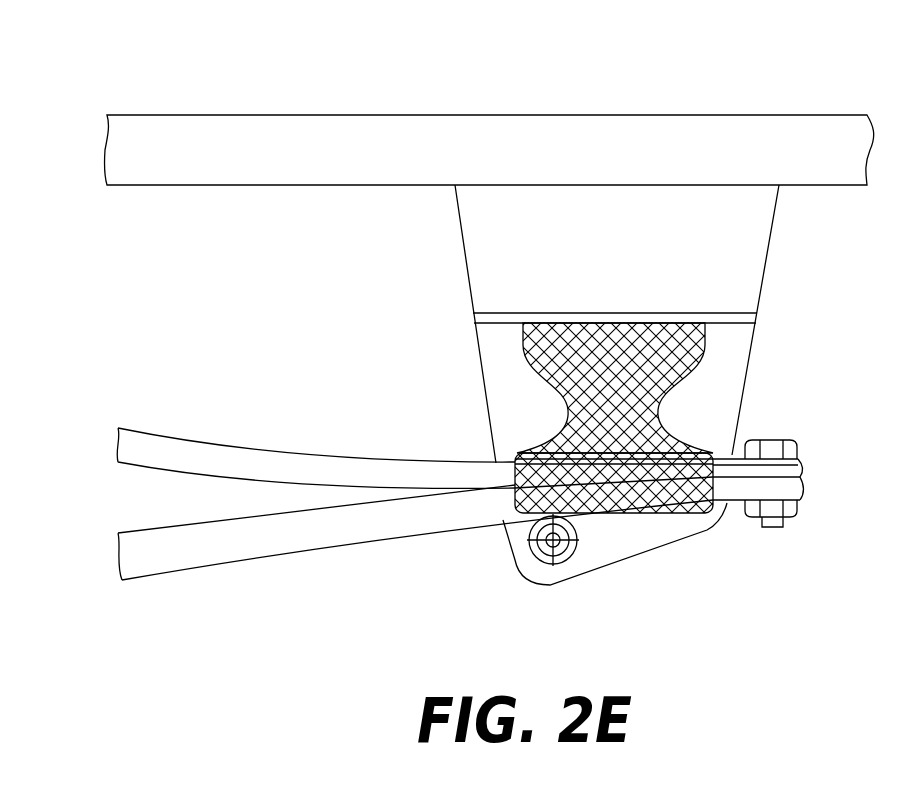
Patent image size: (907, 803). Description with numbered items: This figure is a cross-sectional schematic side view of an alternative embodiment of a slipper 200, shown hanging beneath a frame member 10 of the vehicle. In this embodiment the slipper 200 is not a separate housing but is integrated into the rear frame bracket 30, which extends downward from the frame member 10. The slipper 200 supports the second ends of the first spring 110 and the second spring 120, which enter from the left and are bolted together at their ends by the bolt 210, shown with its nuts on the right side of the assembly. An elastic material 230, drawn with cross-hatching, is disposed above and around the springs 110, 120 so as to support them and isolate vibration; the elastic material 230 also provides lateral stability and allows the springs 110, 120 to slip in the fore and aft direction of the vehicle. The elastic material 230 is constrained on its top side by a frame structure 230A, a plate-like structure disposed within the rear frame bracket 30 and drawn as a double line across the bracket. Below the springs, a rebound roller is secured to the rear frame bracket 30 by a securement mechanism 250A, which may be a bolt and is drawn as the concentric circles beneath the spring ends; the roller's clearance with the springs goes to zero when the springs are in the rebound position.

The vehicle frame / support member 10 is at (607, 130).
The rear frame bracket 30 is at (738, 263).
The frame structure 230A is at (740, 318).
The elastic material 230 is at (557, 372).
The slipper 200 is at (797, 383).
The bolt 210 is at (790, 450).
The securement mechanism 250A is at (513, 560).
The second spring 120 is at (344, 473).
The first spring 110 is at (355, 527).